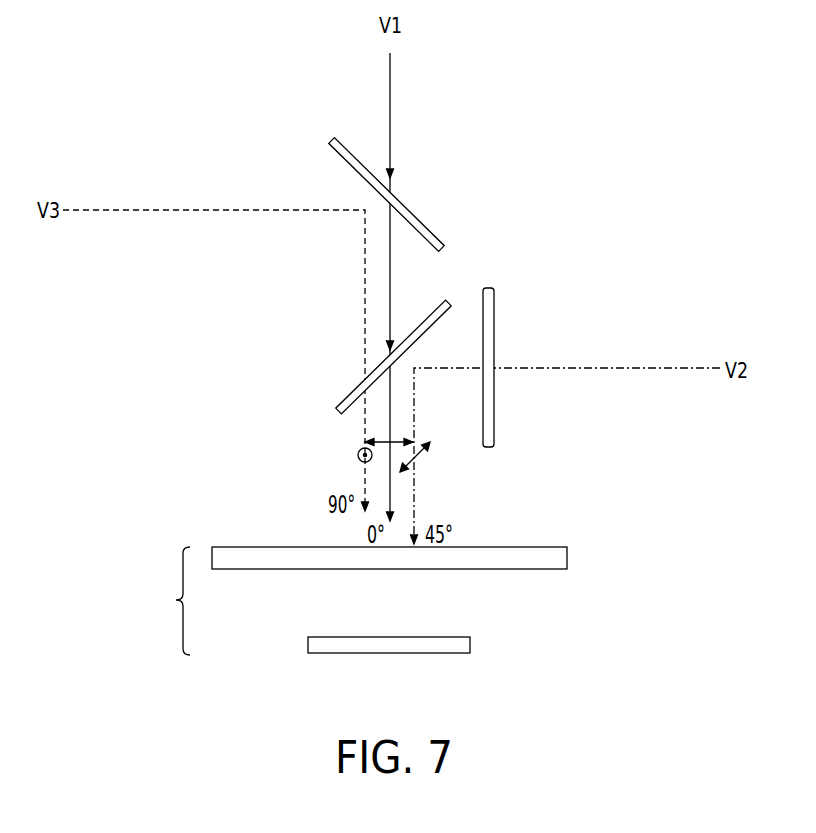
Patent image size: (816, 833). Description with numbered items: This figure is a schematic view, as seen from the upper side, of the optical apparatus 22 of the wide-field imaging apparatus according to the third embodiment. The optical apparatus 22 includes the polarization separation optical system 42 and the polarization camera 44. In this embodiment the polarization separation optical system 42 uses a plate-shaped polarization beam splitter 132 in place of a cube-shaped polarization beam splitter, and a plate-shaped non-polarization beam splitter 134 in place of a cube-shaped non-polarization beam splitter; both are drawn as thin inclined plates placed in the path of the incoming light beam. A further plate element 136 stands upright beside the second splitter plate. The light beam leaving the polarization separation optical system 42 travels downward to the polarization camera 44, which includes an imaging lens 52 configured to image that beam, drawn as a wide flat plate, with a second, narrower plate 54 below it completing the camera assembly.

The optical apparatus 22 is at (193, 412).
The polarization separation optical system 42 is at (570, 218).
The polarization camera 44 is at (168, 601).
The imaging lens 52 is at (565, 559).
The second plate 54 is at (466, 645).
The plate-shaped polarization beam splitter 132 is at (432, 231).
The plate-shaped non-polarization beam splitter 134 is at (348, 403).
The polarizing plate 136 is at (490, 333).